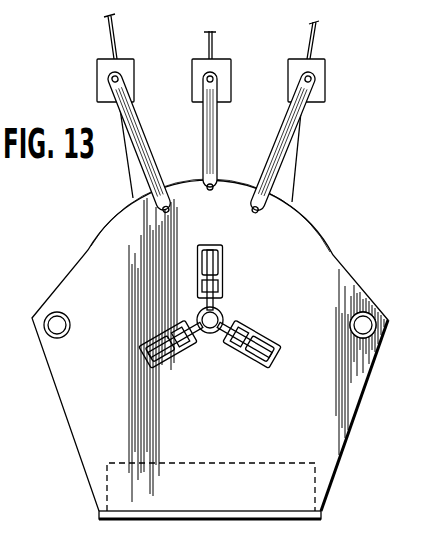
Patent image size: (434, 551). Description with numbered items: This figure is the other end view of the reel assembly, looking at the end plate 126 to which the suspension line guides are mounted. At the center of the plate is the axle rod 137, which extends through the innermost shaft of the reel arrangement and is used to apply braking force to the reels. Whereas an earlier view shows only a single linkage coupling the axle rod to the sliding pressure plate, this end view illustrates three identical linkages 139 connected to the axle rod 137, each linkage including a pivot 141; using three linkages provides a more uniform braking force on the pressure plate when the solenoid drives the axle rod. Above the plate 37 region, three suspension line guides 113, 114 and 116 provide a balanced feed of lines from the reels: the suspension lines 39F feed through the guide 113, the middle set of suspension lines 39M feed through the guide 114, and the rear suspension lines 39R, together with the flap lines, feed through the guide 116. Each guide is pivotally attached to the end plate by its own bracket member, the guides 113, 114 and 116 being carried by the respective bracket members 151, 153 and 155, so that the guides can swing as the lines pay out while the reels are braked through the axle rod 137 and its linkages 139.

The mounting plate 37 is at (66, 254).
The end plate 126 is at (347, 292).
The suspension line guide 113 is at (127, 78).
The suspension line guide 114 is at (226, 78).
The suspension line guide 116 is at (321, 78).
The suspension lines 39F is at (114, 40).
The middle set of suspension lines 39M is at (213, 42).
The rear suspension lines 39R is at (318, 40).
The bracket member 151 is at (146, 140).
The bracket member 153 is at (217, 134).
The bracket member 155 is at (303, 127).
The axle rod 137 is at (208, 330).
The linkage 139 is at (226, 264).
The pivot 141 is at (213, 288).